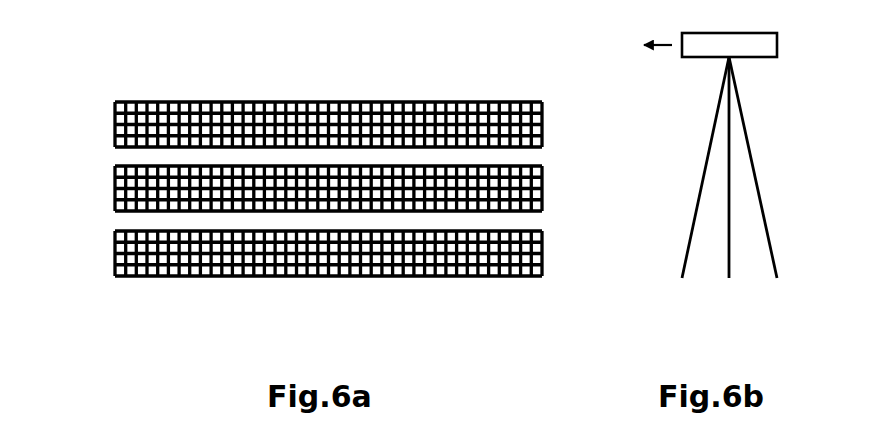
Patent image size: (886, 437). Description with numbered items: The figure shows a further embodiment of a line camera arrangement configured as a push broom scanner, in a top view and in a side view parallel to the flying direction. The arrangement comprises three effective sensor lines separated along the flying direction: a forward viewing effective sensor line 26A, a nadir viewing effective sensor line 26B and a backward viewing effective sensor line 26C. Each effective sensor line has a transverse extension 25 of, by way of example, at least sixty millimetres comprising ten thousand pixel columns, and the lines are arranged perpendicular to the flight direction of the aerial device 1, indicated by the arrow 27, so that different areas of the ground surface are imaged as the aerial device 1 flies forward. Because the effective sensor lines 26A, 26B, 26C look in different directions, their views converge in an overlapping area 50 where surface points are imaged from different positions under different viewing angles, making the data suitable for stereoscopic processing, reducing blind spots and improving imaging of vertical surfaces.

In FIG. 6B, the aerial device 1 is at (732, 51).
In FIG. 6A, the transverse extension 25 is at (542, 80).
In FIG. 6A, the forward viewing effective sensor line 26A is at (281, 111).
In FIG. 6B, the forward viewing effective sensor line 26A is at (663, 167).
In FIG. 6A, the nadir viewing effective sensor line 26B is at (281, 176).
In FIG. 6B, the nadir viewing effective sensor line 26B is at (802, 167).
In FIG. 6A, the backward viewing effective sensor line 26C is at (281, 242).
In FIG. 6B, the backward viewing effective sensor line 26C is at (793, 167).
In FIG. 6A, the scanning direction 27 is at (548, 107).
In FIG. 6B, the overlapping area 50 is at (777, 303).